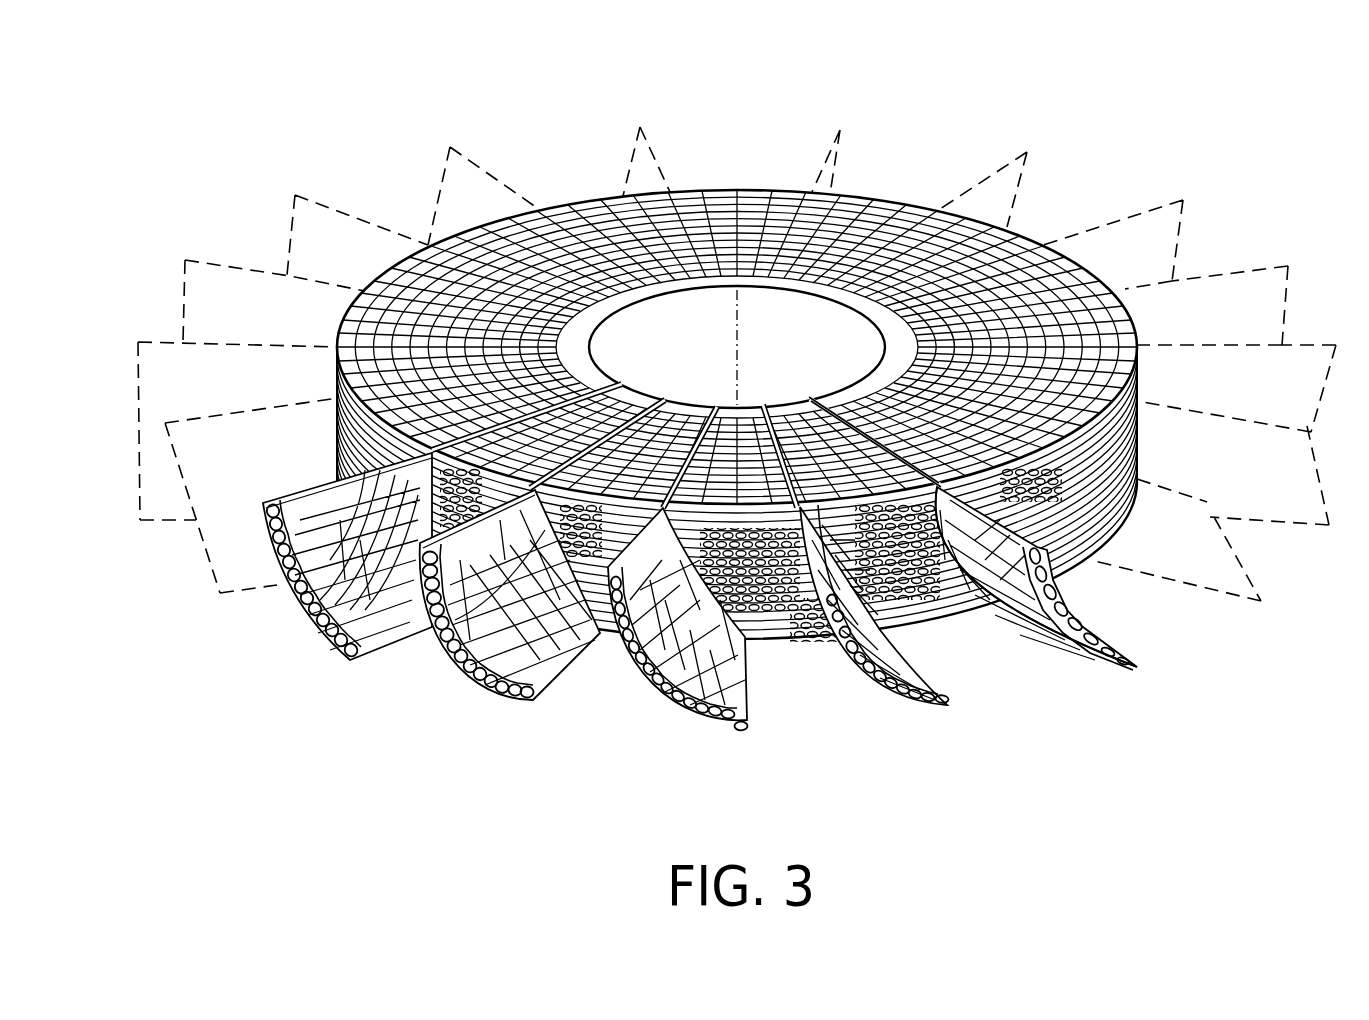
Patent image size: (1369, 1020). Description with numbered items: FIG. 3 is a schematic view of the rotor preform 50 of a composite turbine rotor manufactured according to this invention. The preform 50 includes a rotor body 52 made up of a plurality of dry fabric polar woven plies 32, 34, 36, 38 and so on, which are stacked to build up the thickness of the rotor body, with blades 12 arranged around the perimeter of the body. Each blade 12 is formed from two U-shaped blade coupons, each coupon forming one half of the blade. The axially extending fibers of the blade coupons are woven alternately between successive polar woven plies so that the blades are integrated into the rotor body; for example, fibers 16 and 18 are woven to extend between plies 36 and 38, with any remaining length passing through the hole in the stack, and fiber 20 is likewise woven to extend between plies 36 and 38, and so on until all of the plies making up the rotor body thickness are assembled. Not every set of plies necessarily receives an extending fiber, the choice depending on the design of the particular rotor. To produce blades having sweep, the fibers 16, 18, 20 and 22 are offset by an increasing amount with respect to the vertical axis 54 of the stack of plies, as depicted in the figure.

The rotor preform 50 is at (396, 62).
The rotor body 52 is at (1018, 268).
The vertical axis 54 is at (742, 378).
The polar woven ply 34 is at (767, 640).
The blade 12 is at (428, 630).
The fiber 20 is at (476, 685).
The fiber 22 is at (536, 690).
The fiber 16 is at (582, 675).
The fiber 18 is at (566, 690).
The polar woven ply 32 is at (810, 647).
The polar woven ply 36 is at (937, 627).
The polar woven ply 38 is at (950, 607).